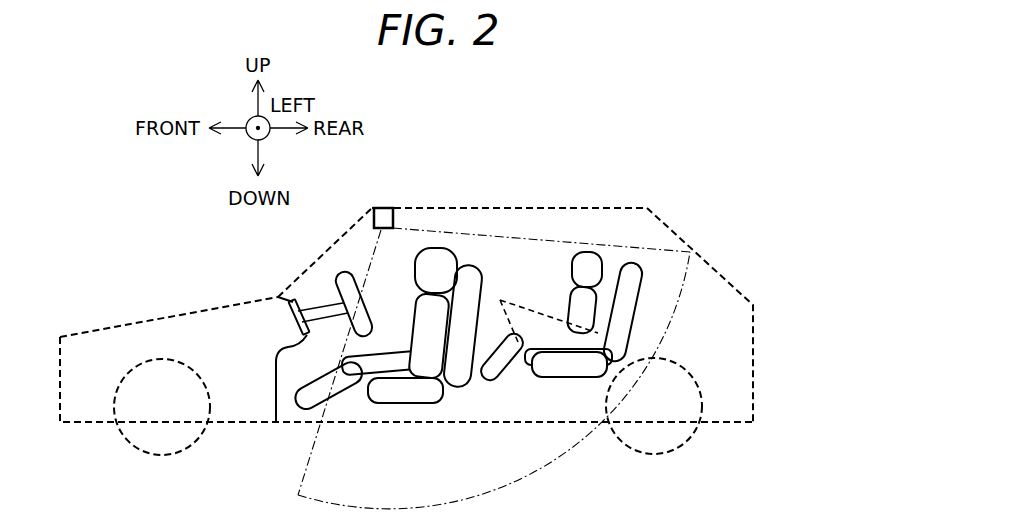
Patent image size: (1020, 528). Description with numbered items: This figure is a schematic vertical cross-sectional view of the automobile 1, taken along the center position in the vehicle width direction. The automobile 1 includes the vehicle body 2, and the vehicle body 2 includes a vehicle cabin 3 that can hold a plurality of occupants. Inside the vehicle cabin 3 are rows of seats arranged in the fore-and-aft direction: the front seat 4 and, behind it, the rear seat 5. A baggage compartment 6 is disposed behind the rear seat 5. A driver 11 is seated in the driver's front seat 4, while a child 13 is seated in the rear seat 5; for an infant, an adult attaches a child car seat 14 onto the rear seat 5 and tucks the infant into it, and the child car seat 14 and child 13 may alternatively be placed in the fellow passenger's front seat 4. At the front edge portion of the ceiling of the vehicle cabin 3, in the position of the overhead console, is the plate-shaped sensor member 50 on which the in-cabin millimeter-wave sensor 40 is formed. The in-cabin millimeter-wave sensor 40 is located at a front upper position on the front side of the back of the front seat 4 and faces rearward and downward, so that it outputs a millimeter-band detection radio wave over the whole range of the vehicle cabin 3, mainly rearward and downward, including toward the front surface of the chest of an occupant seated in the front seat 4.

The automobile 1 is at (435, 285).
The vehicle body 2 is at (123, 328).
The vehicle cabin 3 is at (510, 222).
The front seat 4 is at (387, 322).
The rear seat 5 is at (560, 332).
The baggage compartment 6 is at (725, 335).
The driver 11 is at (435, 250).
The child 13 is at (585, 258).
The child car seat 14 is at (523, 322).
The in-cabin millimeter-wave sensor 40 is at (383, 208).
The plate-shaped sensor member 50 is at (411, 164).